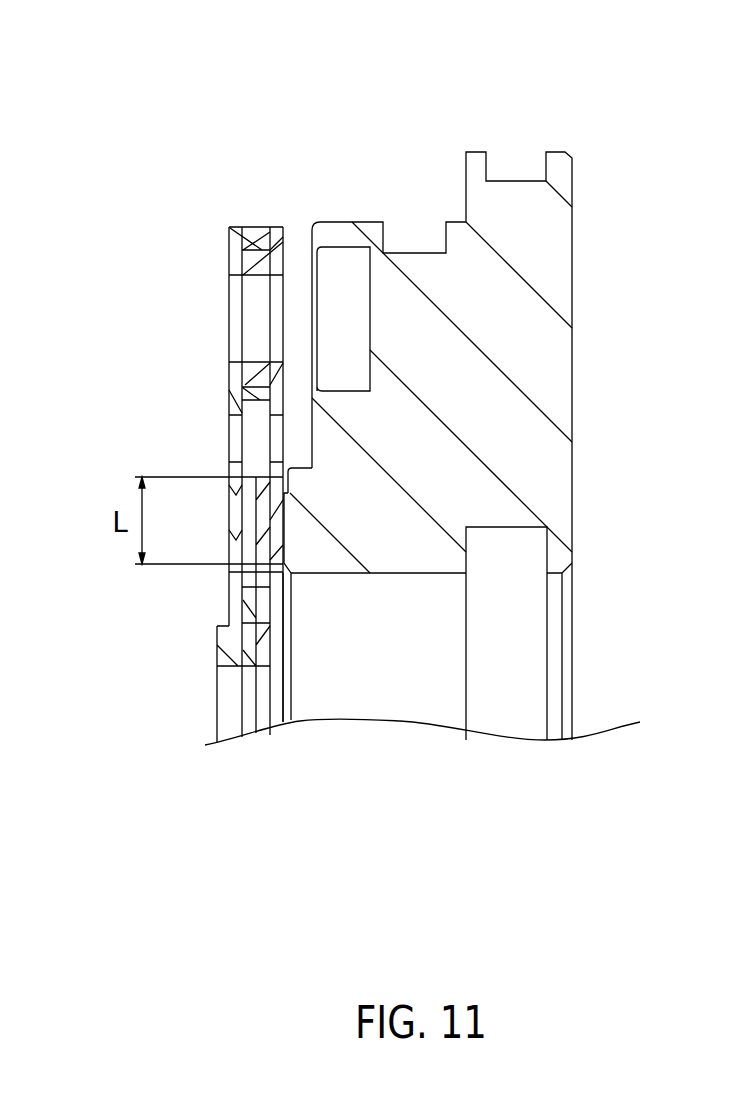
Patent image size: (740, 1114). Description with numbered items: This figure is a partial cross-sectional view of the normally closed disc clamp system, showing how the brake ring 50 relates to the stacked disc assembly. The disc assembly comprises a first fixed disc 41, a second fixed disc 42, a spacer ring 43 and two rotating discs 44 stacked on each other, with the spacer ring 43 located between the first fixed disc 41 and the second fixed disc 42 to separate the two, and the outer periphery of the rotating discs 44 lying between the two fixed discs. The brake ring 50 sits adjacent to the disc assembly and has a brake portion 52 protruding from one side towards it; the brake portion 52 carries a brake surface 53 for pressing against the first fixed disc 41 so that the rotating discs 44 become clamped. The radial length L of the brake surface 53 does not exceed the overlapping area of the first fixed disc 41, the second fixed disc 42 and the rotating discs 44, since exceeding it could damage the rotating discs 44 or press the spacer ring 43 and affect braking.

The first fixed disc 41 is at (278, 384).
The second fixed disc 42 is at (237, 392).
The spacer ring 43 is at (262, 237).
The rotating discs 44 is at (265, 575).
The brake ring 50 is at (522, 344).
The brake portion 52 is at (298, 528).
The brake surface 53 is at (289, 493).